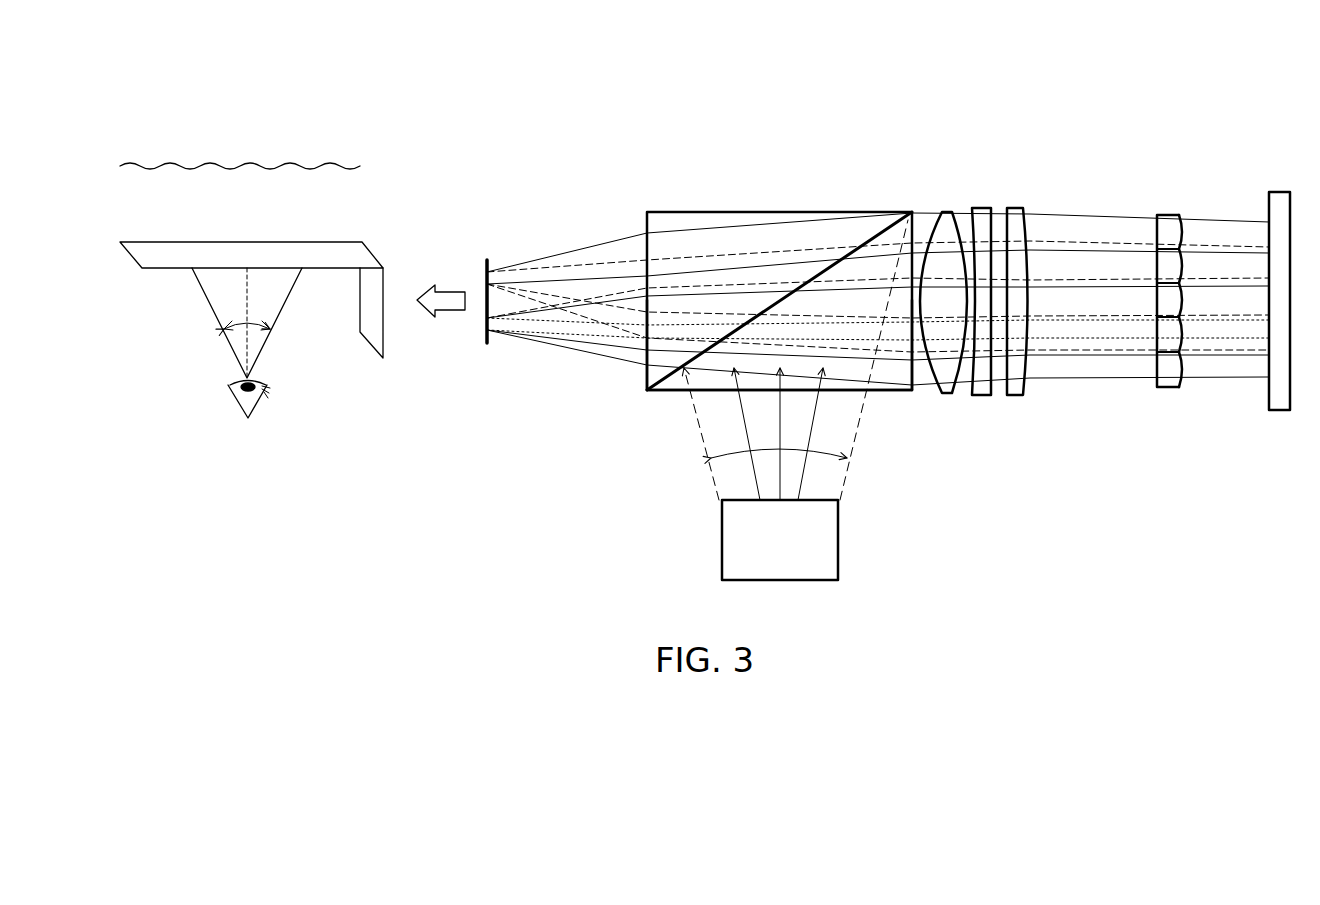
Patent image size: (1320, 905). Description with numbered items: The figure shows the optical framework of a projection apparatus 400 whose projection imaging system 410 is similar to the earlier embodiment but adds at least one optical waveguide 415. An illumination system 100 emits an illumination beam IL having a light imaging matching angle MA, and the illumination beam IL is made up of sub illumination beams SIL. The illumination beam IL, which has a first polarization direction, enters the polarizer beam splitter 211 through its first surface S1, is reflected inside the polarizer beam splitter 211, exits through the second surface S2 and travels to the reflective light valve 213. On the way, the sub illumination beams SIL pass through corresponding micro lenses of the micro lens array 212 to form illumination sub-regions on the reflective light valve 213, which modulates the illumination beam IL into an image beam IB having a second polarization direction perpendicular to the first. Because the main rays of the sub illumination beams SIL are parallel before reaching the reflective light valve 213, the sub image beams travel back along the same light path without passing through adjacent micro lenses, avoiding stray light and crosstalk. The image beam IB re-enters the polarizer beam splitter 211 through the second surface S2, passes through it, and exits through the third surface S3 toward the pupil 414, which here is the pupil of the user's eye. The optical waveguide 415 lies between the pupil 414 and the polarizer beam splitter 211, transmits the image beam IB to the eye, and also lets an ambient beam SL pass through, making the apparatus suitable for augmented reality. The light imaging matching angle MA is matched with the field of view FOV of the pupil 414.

The projection apparatus 400 is at (903, 333).
The projection imaging system 410 is at (934, 73).
The polarizer beam splitter 211 is at (710, 211).
The micro lens array 212 is at (1167, 214).
The reflective light valve 213 is at (1278, 191).
The optical waveguide 415 is at (313, 248).
The pupil 414 is at (258, 407).
The illumination system 100 is at (721, 541).
The ambient beam SL is at (326, 163).
The image beam IB is at (453, 289).
The field of view FOV is at (257, 331).
The first surface S1 is at (721, 394).
The second surface S2 is at (915, 377).
The third surface S3 is at (644, 353).
The illumination beam IL is at (854, 479).
The sub illumination beams SIL is at (842, 421).
The light imaging matching angle MA is at (742, 456).